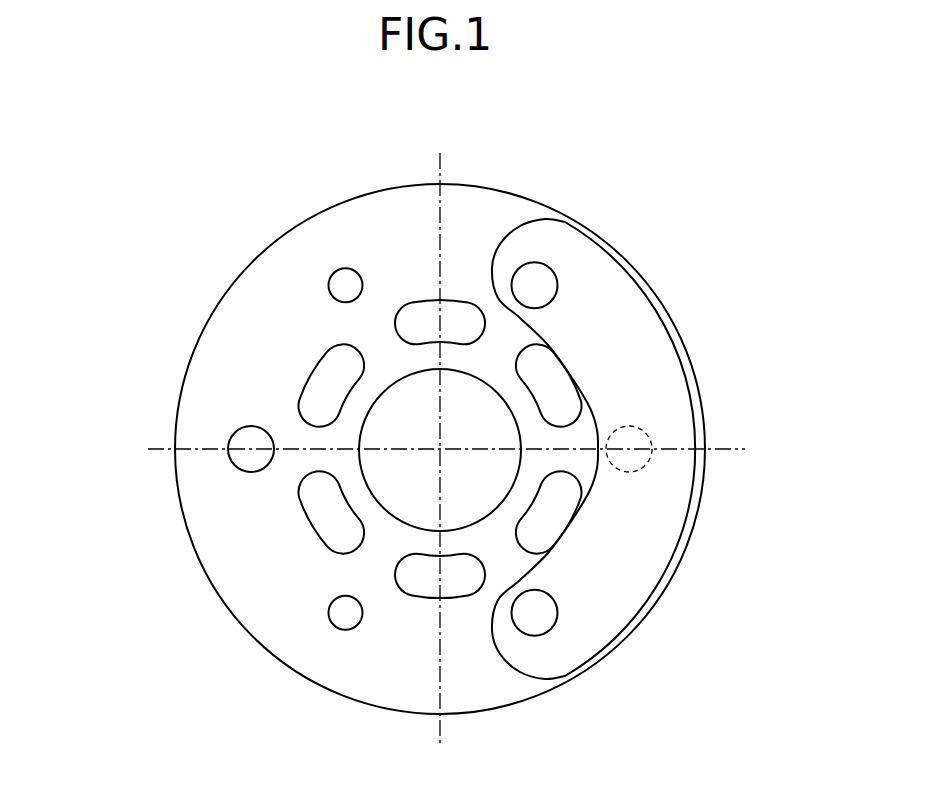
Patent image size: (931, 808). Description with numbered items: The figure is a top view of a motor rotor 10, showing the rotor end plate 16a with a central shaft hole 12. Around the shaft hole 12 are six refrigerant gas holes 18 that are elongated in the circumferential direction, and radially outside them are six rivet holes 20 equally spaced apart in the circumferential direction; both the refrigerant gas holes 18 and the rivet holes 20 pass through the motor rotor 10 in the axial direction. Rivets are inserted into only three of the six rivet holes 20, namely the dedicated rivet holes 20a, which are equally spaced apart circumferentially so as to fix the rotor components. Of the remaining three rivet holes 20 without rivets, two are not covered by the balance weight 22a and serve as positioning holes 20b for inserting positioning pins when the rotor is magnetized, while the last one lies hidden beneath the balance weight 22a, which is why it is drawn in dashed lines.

The motor rotor 10 is at (714, 256).
The shaft hole 12 is at (423, 429).
The rotor end plate 16a is at (489, 217).
The refrigerant gas hole 18 is at (420, 313).
The rivet hole 20 is at (650, 457).
The dedicated rivet hole 20a is at (534, 287).
The positioning hole 20b is at (345, 286).
The balance weight 22a is at (653, 353).